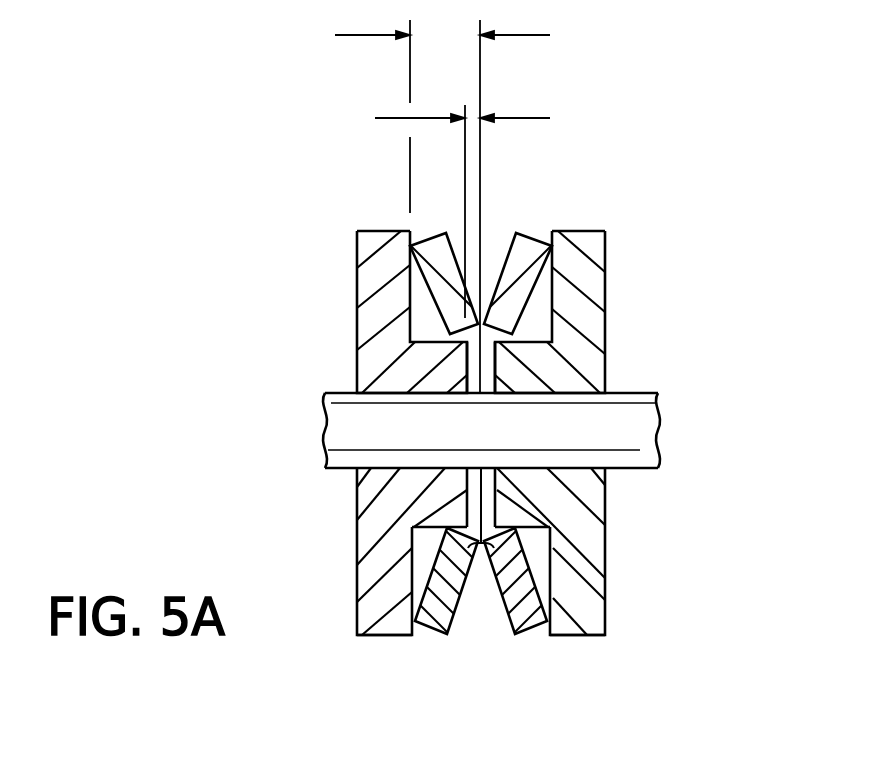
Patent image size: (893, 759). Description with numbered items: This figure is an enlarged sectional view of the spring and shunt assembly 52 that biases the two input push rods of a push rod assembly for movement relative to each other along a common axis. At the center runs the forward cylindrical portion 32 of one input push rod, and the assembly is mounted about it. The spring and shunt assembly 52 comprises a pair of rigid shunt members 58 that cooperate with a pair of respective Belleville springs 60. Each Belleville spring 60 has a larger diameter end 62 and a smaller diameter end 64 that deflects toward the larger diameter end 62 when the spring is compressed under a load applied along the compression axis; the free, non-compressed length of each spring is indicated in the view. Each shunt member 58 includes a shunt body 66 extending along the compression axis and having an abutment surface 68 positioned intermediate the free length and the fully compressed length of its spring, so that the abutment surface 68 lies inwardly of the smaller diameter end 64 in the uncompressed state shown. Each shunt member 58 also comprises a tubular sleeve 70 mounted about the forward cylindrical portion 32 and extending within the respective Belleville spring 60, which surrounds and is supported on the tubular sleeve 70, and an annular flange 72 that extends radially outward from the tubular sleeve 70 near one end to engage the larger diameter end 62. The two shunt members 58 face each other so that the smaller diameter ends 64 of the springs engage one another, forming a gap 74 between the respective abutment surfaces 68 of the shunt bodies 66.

The forward cylindrical portion 32 is at (642, 418).
The spring and shunt assembly 52 is at (690, 178).
The shunt member 58 is at (357, 383).
The Belleville spring 60 is at (458, 603).
The larger diameter end 62 is at (417, 618).
The smaller diameter end 64 is at (482, 323).
The shunt body 66 is at (460, 514).
The abutment surface 68 is at (475, 394).
The tubular sleeve 70 is at (452, 477).
The annular flange 72 is at (390, 230).
The gap 74 is at (482, 546).